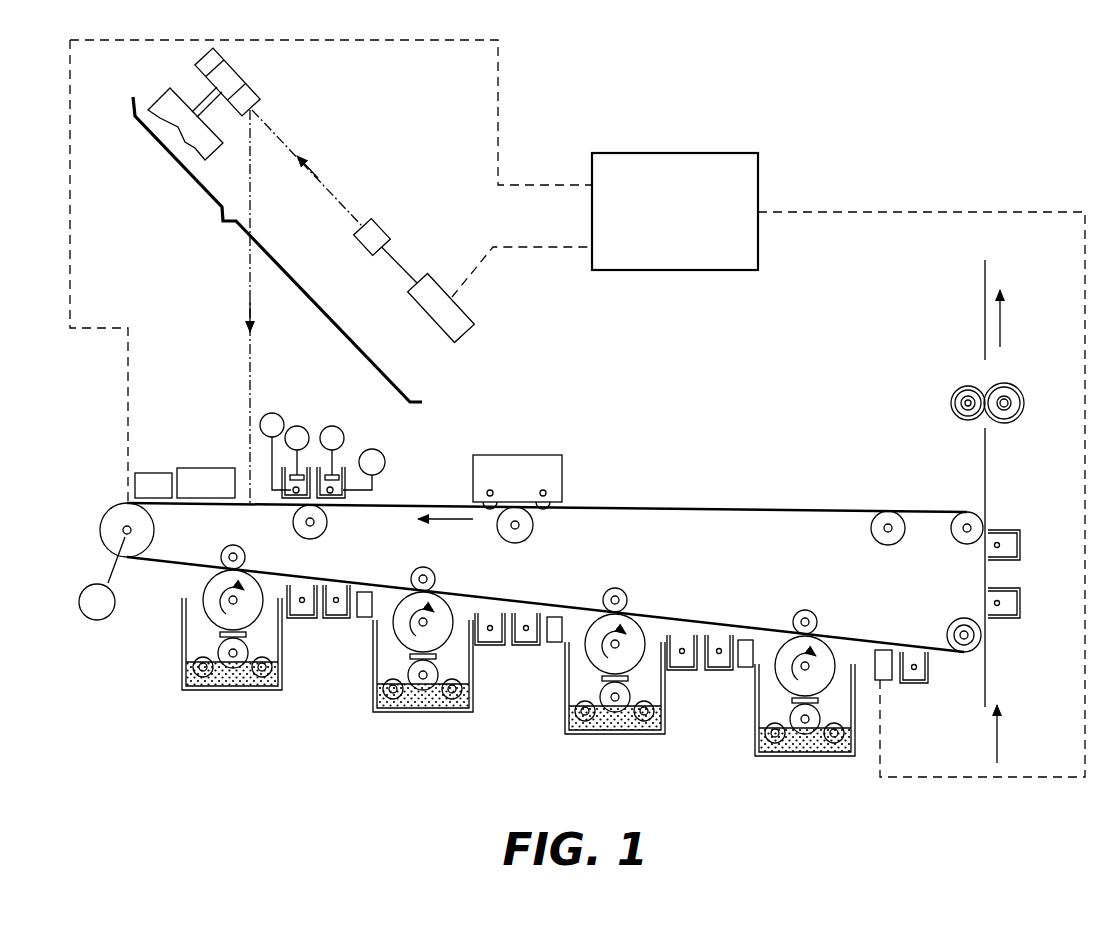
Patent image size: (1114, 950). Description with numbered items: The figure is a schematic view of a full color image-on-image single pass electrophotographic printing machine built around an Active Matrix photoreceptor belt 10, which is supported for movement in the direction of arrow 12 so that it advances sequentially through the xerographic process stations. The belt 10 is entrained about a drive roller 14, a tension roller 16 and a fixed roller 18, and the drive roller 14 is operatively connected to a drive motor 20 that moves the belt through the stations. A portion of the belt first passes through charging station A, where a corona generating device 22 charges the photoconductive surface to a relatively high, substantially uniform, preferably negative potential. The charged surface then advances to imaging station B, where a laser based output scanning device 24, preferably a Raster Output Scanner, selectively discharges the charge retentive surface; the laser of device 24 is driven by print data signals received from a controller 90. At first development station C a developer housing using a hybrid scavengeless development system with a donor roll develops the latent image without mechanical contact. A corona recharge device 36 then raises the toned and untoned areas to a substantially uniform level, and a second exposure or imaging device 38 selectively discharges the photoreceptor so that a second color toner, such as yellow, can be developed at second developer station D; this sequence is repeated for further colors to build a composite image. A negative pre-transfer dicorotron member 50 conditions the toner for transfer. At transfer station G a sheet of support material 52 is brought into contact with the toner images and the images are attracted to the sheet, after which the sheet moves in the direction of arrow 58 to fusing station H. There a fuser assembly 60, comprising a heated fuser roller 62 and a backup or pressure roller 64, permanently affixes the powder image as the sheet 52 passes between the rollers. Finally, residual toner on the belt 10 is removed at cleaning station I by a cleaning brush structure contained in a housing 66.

The photoreceptor belt 10 is at (747, 505).
The arrow 12 is at (432, 510).
The drive roller 14 is at (107, 512).
The tension roller 16 is at (967, 653).
The fixed roller 18 is at (957, 505).
The drive motor 20 is at (107, 615).
The corona generating device 22 is at (313, 420).
The laser based output scanning device 24 is at (223, 222).
The corona recharge device 36 is at (295, 592).
The second exposure or imaging device 38 is at (365, 608).
The negative pre-transfer dicorotron member 50 is at (925, 688).
The sheet of support material 52 is at (987, 268).
The arrow 58 is at (1000, 320).
The fuser assembly 60 is at (993, 373).
The heated fuser roller 62 is at (958, 391).
The backup or pressure roller 64 is at (1024, 397).
The housing 66 is at (517, 470).
The controller 90 is at (672, 152).
The charging station A is at (373, 440).
The imaging station B is at (235, 458).
The first development station C is at (190, 701).
The second developer station D is at (379, 724).
The transfer station G is at (1029, 576).
The fusing station H is at (1025, 379).
The cleaning station I is at (527, 455).